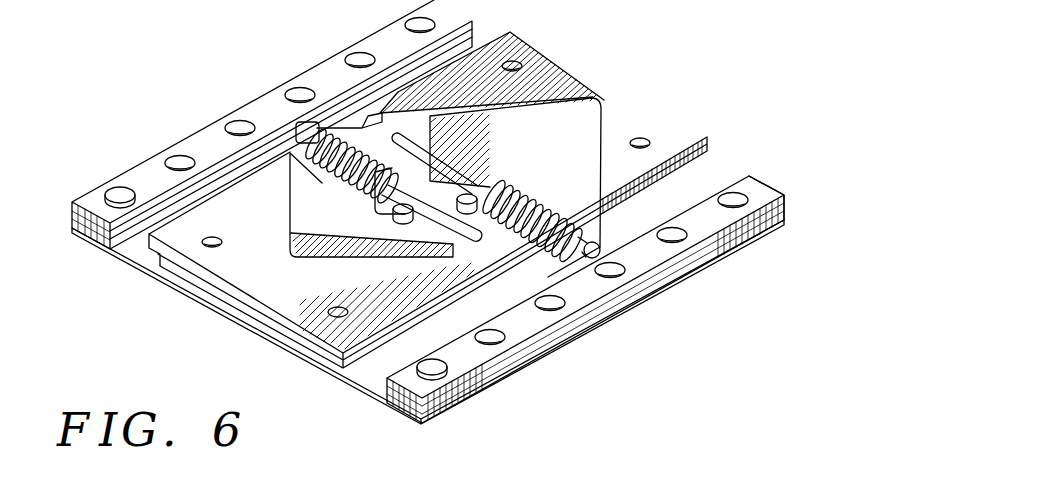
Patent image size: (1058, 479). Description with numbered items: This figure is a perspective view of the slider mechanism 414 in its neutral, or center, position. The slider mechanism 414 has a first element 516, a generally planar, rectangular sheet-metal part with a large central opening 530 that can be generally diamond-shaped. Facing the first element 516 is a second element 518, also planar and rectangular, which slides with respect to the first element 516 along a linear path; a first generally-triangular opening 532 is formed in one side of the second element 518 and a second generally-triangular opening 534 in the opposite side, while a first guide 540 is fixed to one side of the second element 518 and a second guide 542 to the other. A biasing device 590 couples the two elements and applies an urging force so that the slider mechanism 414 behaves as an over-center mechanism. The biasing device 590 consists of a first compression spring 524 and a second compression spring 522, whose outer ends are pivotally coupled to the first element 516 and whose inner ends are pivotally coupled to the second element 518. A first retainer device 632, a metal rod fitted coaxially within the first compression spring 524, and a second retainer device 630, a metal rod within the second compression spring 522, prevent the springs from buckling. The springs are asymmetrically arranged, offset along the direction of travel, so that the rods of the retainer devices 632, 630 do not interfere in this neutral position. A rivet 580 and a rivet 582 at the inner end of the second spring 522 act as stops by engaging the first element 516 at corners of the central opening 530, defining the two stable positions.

The slider mechanism 414 is at (222, 96).
The first element 516 is at (516, 62).
The second element 518 is at (577, 130).
The second compression spring 522 is at (507, 186).
The first compression spring 524 is at (291, 219).
The central opening 530 is at (579, 212).
The first generally-triangular opening 532 is at (307, 185).
The second generally-triangular opening 534 is at (548, 254).
The first guide 540 is at (386, 30).
The second guide 542 is at (758, 193).
The rivet 580 is at (407, 216).
The rivet 582 is at (473, 197).
The biasing device 590 is at (349, 192).
The second retainer device 630 is at (388, 120).
The first retainer device 632 is at (381, 215).